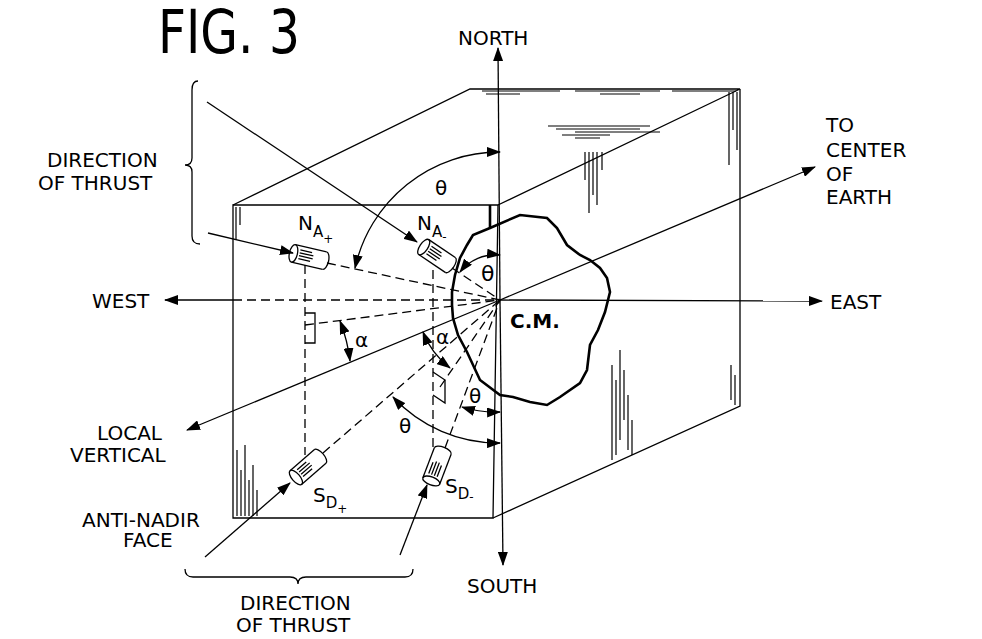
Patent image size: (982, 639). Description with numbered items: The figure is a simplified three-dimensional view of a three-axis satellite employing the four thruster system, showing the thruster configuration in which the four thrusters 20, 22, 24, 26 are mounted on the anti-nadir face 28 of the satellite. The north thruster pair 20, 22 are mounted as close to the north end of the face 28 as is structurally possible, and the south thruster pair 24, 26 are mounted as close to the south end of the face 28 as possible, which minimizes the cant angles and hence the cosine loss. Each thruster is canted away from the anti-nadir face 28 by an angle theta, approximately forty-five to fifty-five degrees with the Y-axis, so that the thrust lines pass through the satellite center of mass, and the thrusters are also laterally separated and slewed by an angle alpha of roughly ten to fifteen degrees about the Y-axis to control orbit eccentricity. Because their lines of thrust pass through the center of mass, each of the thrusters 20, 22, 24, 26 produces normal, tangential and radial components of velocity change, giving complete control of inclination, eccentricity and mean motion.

The north thruster 20 is at (327, 257).
The north thruster 22 is at (447, 257).
The south thruster 24 is at (323, 462).
The south thruster 26 is at (445, 460).
The anti-nadir face 28 is at (233, 353).